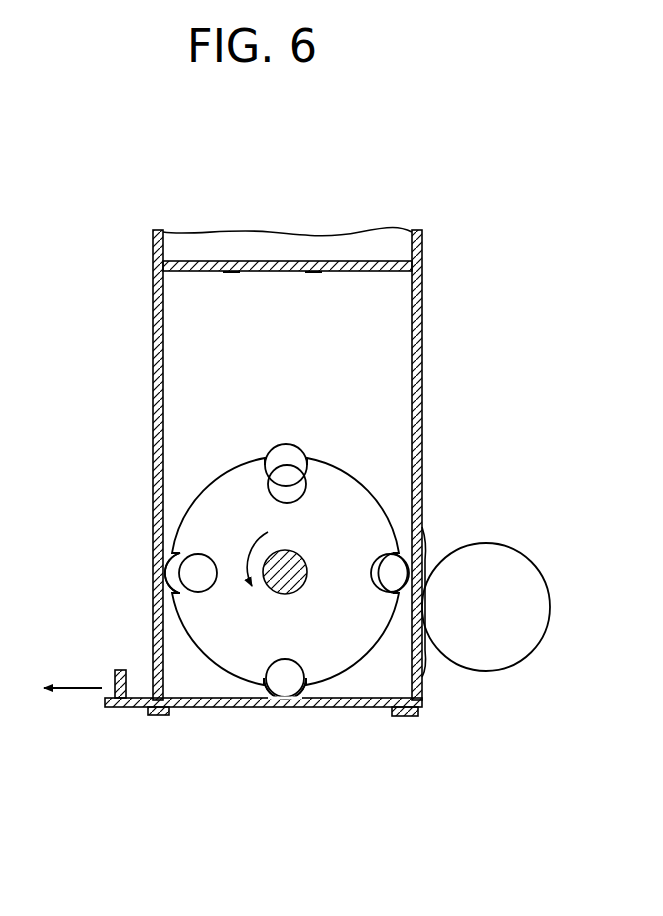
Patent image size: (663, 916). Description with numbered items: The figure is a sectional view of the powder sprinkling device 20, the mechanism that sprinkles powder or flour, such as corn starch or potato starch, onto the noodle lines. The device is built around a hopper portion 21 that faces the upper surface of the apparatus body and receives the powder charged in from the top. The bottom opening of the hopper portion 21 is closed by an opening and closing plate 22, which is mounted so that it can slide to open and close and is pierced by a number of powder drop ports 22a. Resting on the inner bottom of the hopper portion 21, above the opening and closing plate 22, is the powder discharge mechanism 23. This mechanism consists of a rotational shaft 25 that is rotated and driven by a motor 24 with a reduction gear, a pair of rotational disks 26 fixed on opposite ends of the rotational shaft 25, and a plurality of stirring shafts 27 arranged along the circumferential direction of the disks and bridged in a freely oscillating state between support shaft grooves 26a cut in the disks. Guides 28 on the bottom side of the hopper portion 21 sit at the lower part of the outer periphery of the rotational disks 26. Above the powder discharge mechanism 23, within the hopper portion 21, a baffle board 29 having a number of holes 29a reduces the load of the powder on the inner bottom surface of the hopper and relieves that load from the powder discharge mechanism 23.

The powder sprinkling device 20 is at (385, 229).
The hopper portion 21 is at (151, 304).
The opening and closing plate 22 is at (110, 698).
The powder drop ports 22a is at (285, 706).
The powder discharge mechanism 23 is at (198, 485).
The motor 24 is at (508, 638).
The rotational shaft 25 is at (293, 562).
The rotational disks 26 is at (166, 558).
The support shaft grooves 26a is at (275, 457).
The stirring shafts 27 is at (290, 482).
The guides 28 is at (184, 692).
The baffle board 29 is at (288, 264).
The holes 29a is at (262, 272).